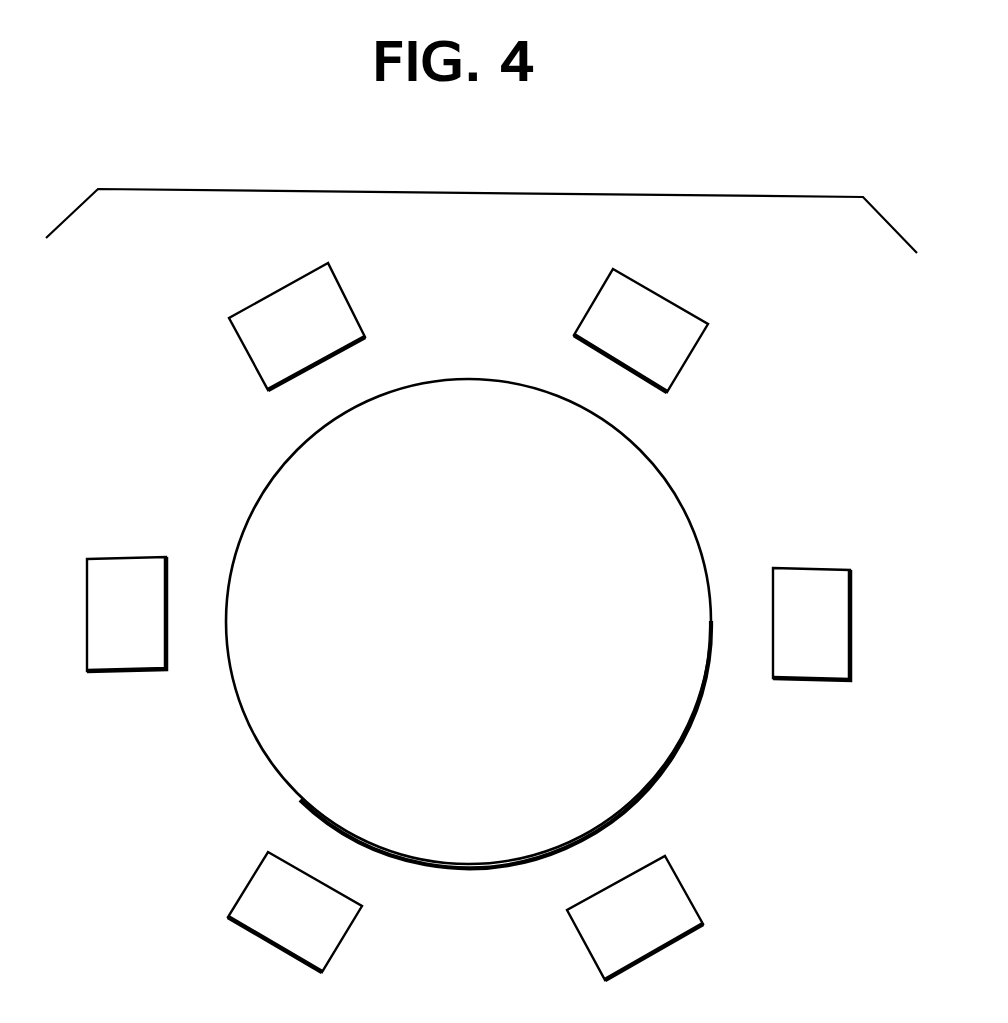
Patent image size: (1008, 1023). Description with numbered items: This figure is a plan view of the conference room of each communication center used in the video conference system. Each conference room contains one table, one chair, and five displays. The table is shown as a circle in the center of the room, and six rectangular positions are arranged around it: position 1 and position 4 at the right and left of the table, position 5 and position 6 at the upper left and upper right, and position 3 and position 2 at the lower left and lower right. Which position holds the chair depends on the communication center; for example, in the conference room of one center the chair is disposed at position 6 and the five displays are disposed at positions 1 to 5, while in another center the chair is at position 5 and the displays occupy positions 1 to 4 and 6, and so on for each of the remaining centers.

The position 1 is at (810, 640).
The position 2 is at (635, 918).
The position 3 is at (295, 912).
The position 4 is at (126, 614).
The position 5 is at (297, 326).
The position 6 is at (641, 330).